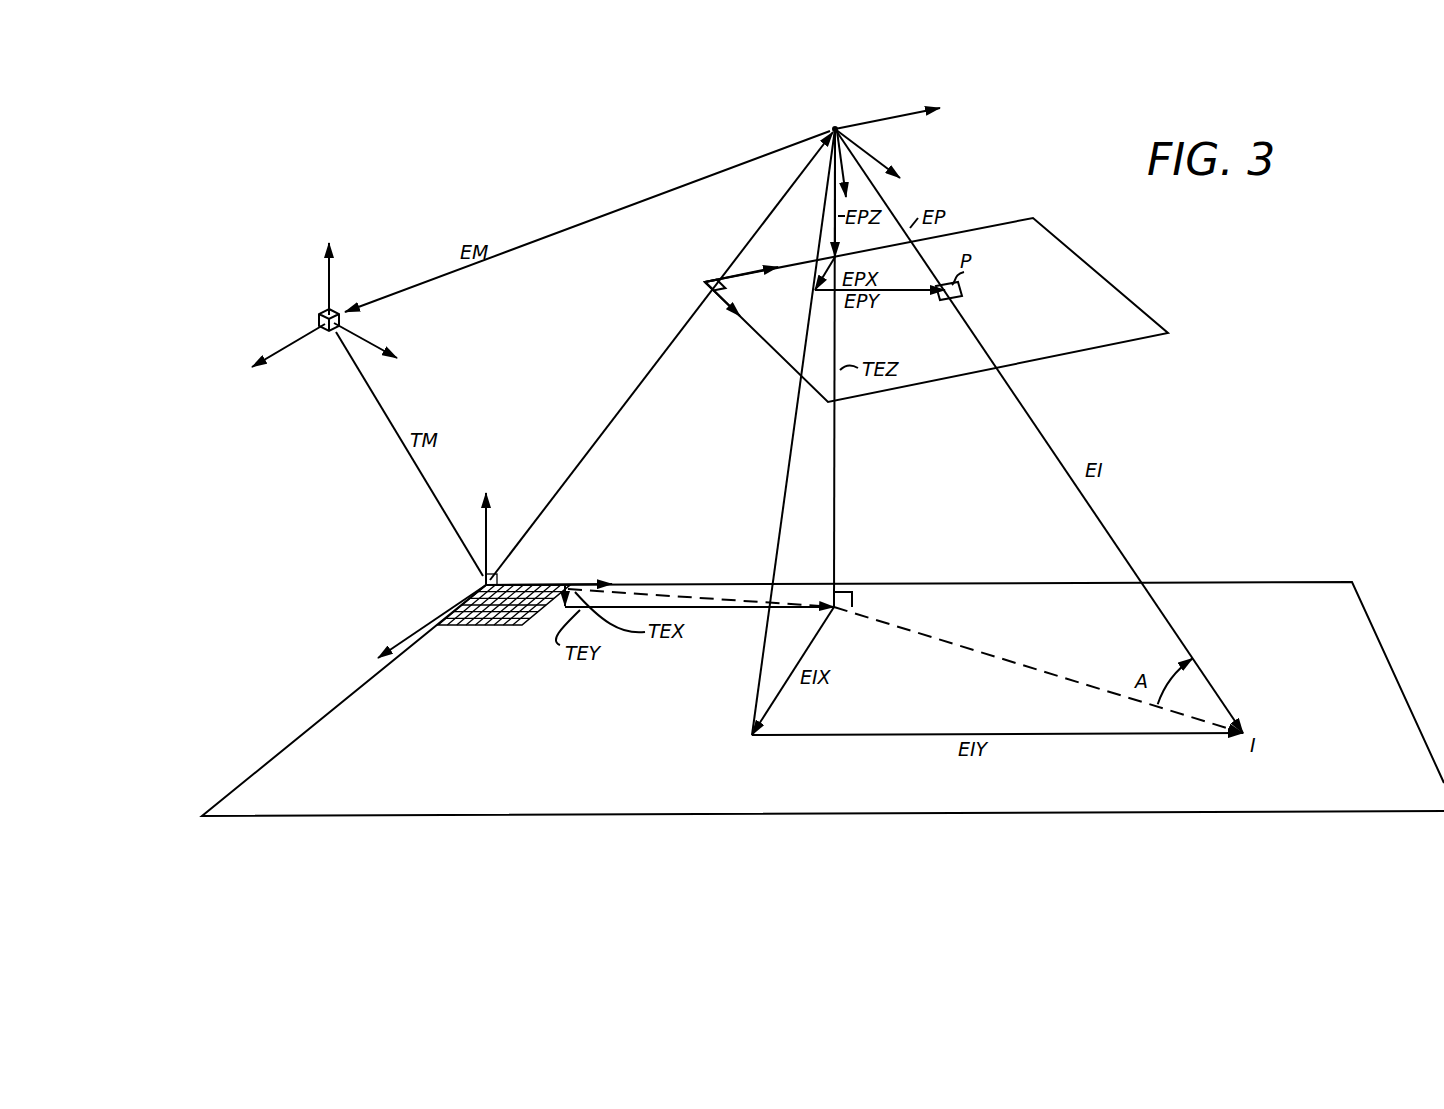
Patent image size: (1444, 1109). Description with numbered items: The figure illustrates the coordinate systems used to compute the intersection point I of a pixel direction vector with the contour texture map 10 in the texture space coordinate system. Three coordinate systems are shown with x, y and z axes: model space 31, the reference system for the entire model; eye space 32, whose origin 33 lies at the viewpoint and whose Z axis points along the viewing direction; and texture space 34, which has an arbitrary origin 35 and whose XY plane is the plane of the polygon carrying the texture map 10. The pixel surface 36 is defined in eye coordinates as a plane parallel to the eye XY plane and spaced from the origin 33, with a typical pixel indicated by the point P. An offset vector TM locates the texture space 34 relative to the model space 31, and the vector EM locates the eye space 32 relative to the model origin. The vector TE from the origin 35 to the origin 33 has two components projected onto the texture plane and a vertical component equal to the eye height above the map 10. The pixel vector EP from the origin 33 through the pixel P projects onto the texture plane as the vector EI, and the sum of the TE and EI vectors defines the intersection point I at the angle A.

The contour texture map 10 is at (823, 699).
The model space 31 is at (282, 306).
The eye space 32 is at (755, 148).
The origin of the eye space 33 is at (831, 126).
The texture space 34 is at (417, 572).
The origin of the texture space 35 is at (483, 580).
The pixel surface 36 is at (1130, 284).